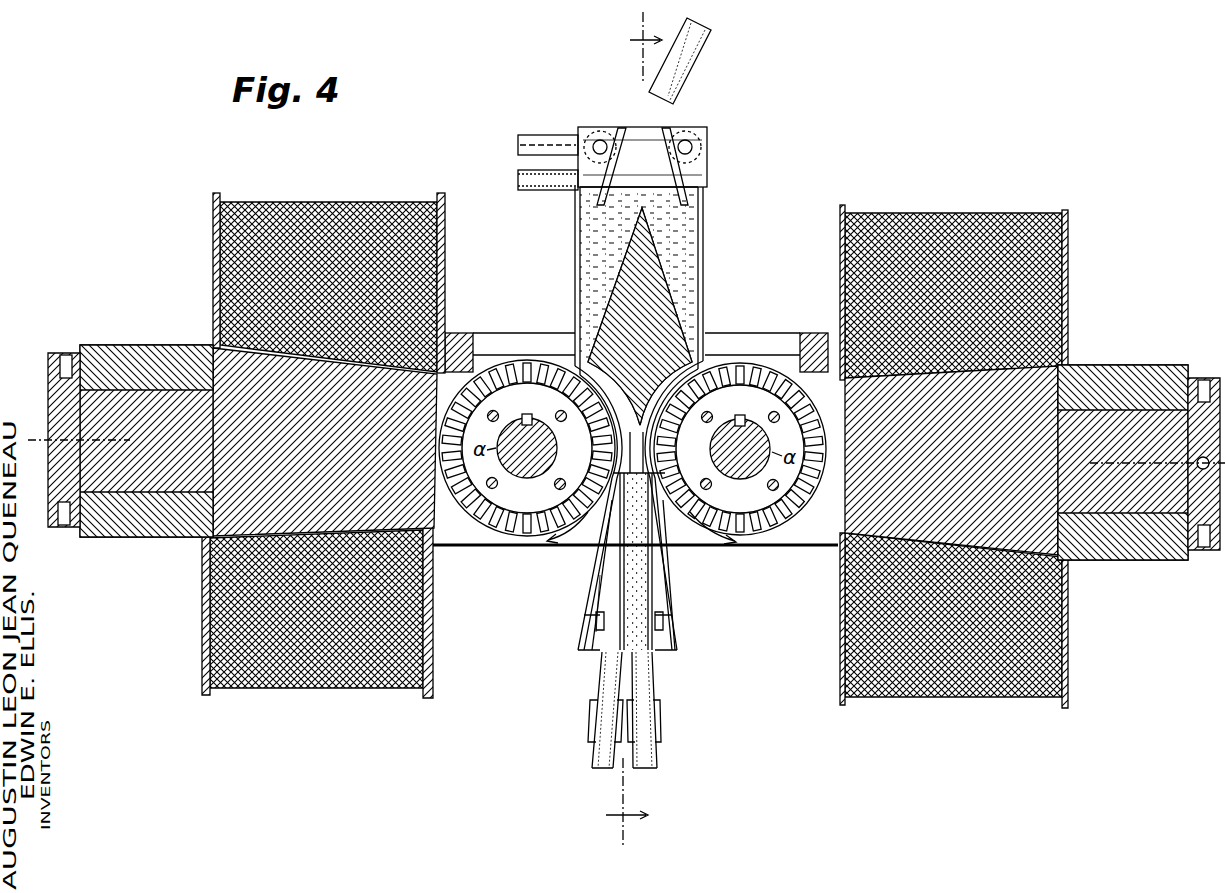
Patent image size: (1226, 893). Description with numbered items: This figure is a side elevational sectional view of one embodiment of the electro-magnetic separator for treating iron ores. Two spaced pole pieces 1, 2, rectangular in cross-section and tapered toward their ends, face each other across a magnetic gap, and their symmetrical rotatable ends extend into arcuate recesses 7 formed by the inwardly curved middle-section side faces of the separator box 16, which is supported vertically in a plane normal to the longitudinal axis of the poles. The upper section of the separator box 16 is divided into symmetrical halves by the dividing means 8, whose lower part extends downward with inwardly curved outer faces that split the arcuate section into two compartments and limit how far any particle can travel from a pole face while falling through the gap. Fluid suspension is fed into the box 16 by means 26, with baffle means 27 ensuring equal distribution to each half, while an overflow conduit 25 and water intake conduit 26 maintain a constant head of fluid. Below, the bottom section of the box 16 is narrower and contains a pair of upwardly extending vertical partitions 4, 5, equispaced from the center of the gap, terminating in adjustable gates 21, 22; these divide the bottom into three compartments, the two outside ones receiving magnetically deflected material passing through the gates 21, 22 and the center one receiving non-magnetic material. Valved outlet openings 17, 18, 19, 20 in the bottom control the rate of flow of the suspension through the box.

The pole piece 1 is at (458, 345).
The pole piece 2 is at (816, 348).
The vertical partition 4 is at (601, 574).
The vertical partition 5 is at (651, 574).
The arcuate recess 7 is at (576, 356).
The dividing means 8 is at (660, 310).
The separator box 16 is at (706, 236).
The valved outlet opening 17 is at (586, 654).
The valved outlet opening 18 is at (600, 770).
The valved outlet opening 19 is at (655, 770).
The valved outlet opening 20 is at (674, 652).
The adjustable gate 21 is at (598, 504).
The adjustable gate 22 is at (666, 510).
The overflow conduit 25 is at (519, 180).
The water intake conduit / feed means 26 is at (648, 94).
The baffle means 27 is at (621, 128).